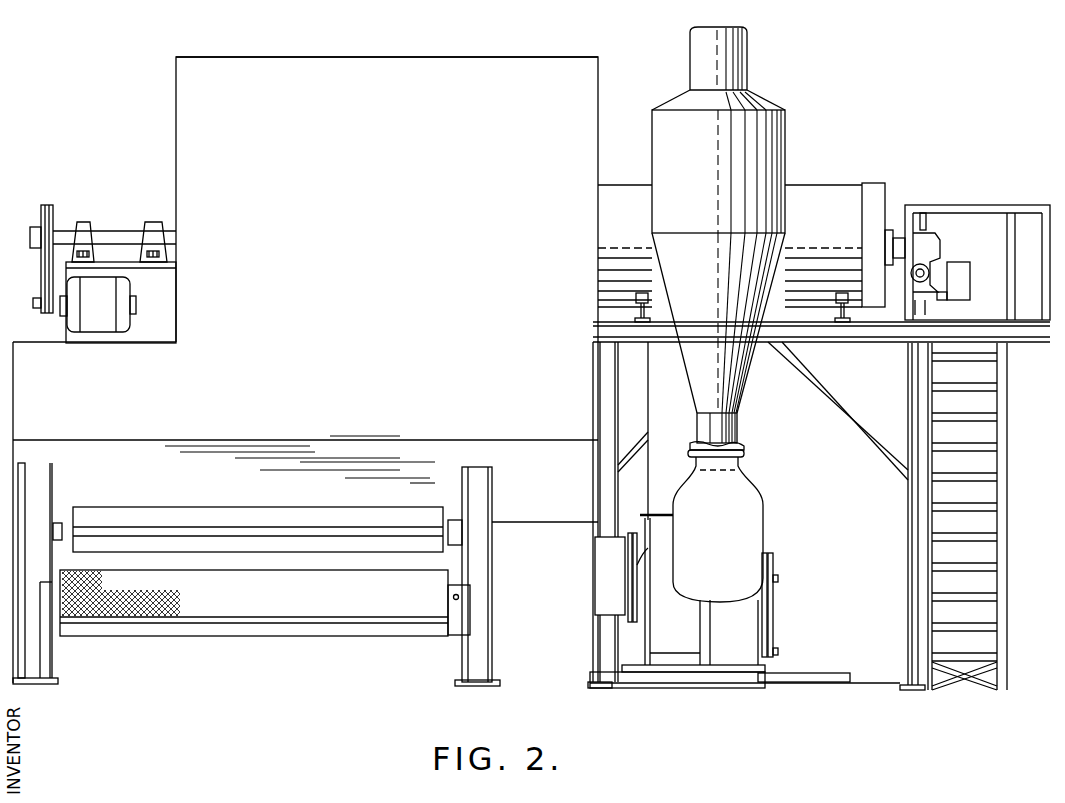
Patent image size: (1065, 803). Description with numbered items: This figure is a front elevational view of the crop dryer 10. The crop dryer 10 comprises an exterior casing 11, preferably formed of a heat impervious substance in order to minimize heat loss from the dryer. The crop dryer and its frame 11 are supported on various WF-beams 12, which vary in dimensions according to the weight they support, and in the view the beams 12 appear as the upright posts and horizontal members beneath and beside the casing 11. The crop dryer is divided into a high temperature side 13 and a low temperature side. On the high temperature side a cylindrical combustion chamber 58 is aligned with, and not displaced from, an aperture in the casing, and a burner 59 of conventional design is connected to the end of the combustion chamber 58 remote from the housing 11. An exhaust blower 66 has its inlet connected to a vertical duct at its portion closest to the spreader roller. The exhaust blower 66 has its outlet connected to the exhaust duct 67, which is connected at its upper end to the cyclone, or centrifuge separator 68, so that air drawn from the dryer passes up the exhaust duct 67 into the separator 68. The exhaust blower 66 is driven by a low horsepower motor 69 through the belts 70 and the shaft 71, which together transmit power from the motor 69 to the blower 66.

The crop dryer 10 is at (158, 92).
The exterior casing 11 is at (545, 106).
The WF-beams 12 is at (37, 500).
The high temperature side 13 is at (448, 65).
The cylindrical combustion chamber 58 is at (828, 236).
The burner 59 is at (935, 262).
The exhaust blower 66 is at (690, 627).
The exhaust duct 67 is at (685, 434).
The cyclone separator 68 is at (777, 153).
The motor 69 is at (747, 647).
The belts 70 is at (775, 610).
The shaft 71 is at (776, 580).